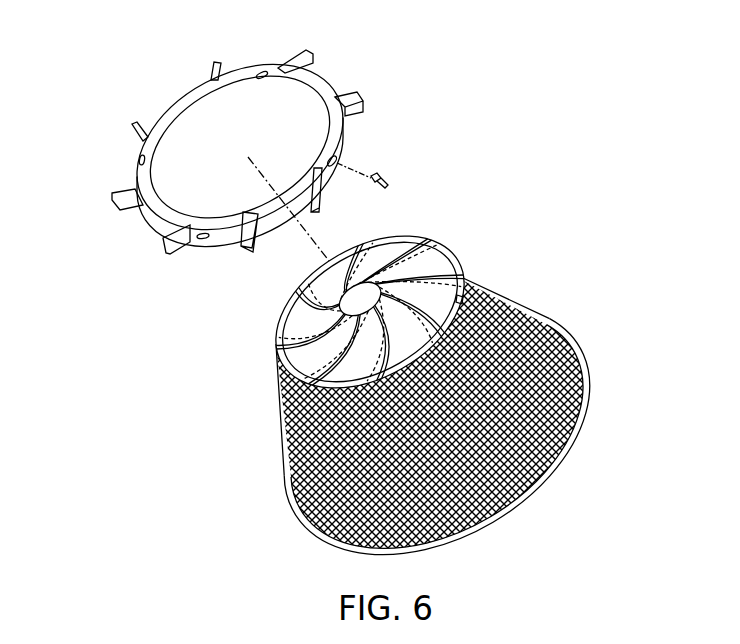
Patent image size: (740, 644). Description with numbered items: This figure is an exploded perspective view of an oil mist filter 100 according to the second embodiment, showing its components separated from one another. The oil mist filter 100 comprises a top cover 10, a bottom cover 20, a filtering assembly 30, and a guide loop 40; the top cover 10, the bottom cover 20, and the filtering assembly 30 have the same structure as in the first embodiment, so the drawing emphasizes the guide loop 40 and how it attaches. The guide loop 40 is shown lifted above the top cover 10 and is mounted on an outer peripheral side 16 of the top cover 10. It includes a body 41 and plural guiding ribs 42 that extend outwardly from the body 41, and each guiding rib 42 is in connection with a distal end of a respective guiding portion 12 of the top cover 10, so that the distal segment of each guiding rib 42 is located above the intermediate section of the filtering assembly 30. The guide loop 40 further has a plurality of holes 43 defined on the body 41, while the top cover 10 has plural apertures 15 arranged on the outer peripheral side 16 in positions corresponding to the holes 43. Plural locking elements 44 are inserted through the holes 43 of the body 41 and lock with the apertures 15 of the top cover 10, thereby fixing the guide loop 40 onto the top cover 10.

The oil mist filter 100 is at (422, 384).
The top cover 10 is at (354, 309).
The guiding portion 12 is at (375, 262).
The aperture 15 is at (447, 280).
The outer peripheral side 16 is at (493, 278).
The bottom cover 20 is at (301, 533).
The filtering assembly 30 is at (286, 430).
The guide loop 40 is at (261, 160).
The body 41 is at (181, 115).
The guiding rib 42 is at (368, 105).
The hole 43 is at (347, 140).
The locking element 44 is at (395, 185).